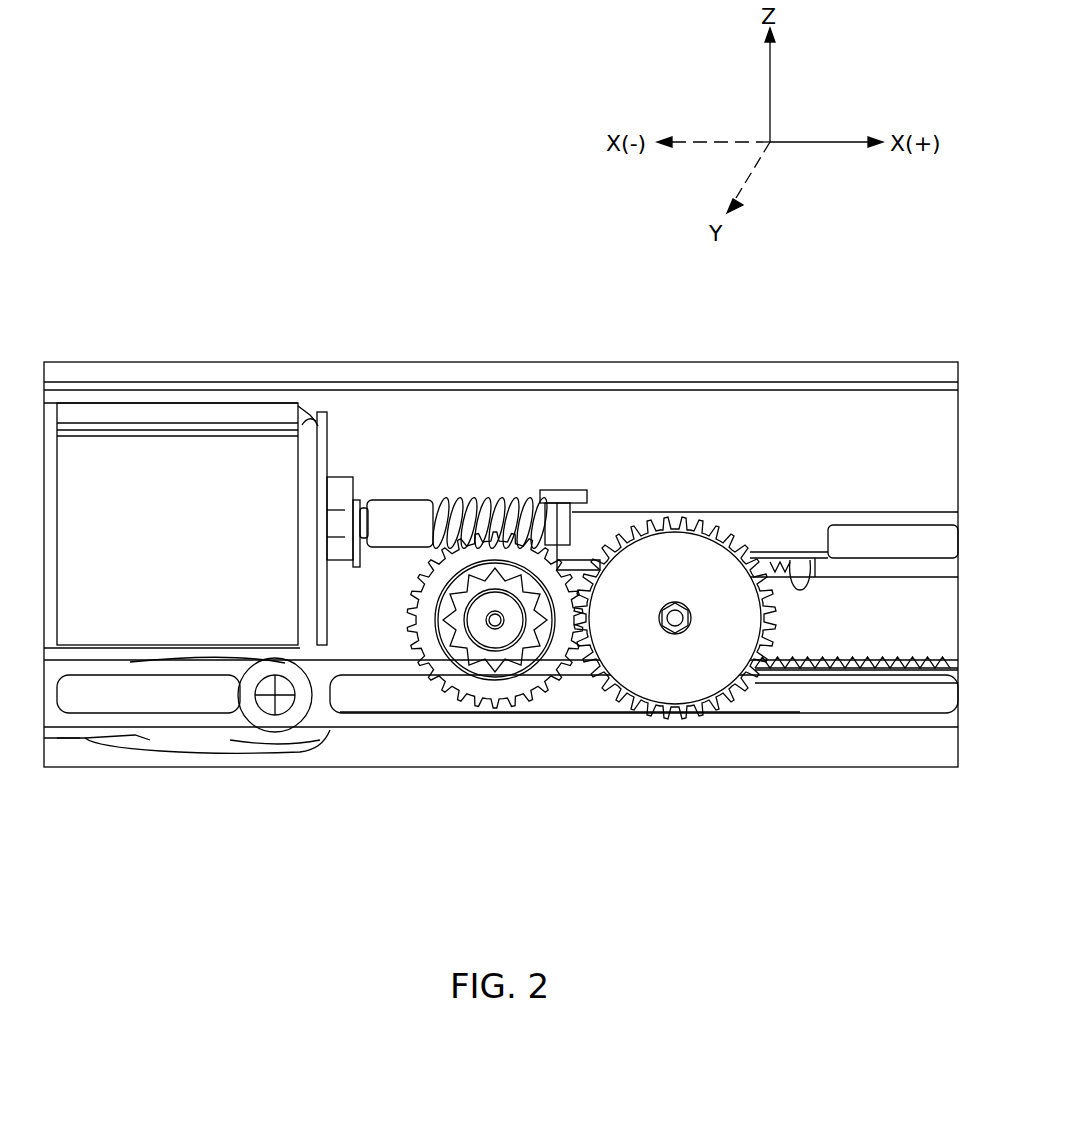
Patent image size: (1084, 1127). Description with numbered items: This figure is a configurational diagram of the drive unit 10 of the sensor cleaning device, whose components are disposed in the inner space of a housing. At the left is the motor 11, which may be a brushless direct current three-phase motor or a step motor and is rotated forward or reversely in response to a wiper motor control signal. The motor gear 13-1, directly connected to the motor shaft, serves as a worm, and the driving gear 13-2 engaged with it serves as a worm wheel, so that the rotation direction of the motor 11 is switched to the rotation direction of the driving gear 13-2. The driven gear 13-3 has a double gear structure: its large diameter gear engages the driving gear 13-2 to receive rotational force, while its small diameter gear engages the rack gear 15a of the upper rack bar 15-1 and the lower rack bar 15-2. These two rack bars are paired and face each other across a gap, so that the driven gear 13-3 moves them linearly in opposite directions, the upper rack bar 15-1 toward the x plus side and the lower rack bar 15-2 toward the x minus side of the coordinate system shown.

The drive unit 10 is at (501, 505).
The motor 11 is at (158, 466).
The motor gear 13-1 is at (462, 488).
The driving gear 13-2 is at (485, 655).
The driven gear 13-3 is at (641, 677).
The upper rack bar 15-1 is at (917, 543).
The lower rack bar 15-2 is at (823, 700).
The rack gear 15a is at (847, 657).